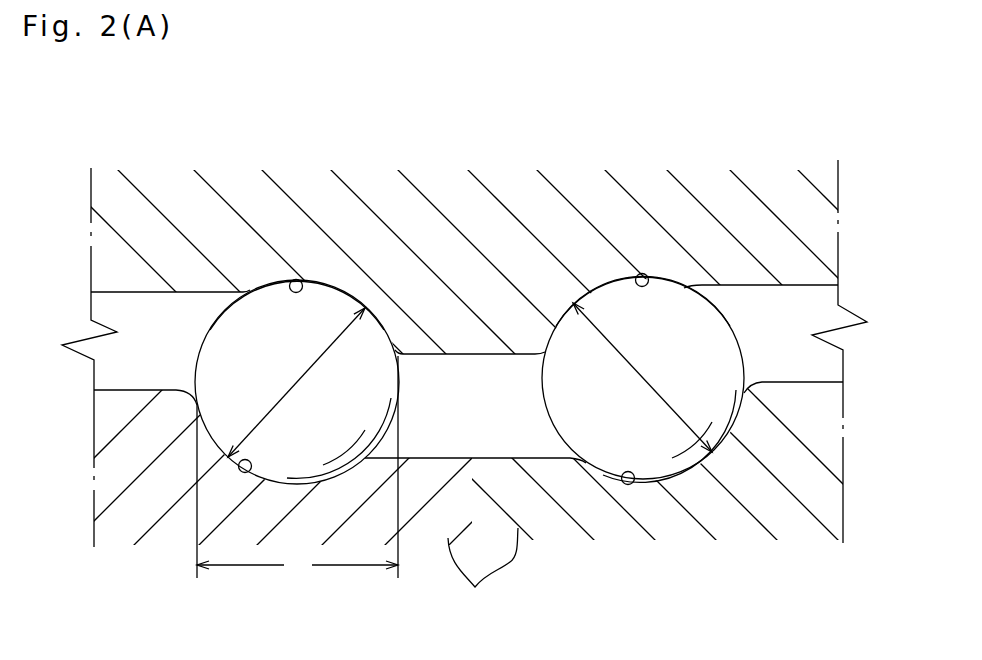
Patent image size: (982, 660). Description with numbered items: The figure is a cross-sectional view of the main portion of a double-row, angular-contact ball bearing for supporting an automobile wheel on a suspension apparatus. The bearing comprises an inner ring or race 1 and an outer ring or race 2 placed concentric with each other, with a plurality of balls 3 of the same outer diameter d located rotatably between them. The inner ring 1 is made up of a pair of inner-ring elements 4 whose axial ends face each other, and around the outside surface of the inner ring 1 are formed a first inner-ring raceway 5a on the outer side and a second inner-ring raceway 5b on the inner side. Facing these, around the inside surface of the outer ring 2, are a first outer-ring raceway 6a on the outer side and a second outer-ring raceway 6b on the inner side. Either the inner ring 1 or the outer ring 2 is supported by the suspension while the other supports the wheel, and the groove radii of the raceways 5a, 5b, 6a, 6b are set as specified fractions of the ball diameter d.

The inner ring 1 is at (809, 477).
The outer ring 2 is at (409, 233).
The balls 3 is at (262, 291).
The inner-ring element 4 is at (472, 458).
The first inner-ring raceway 5a is at (246, 469).
The second inner-ring raceway 5b is at (616, 479).
The first outer-ring raceway 6a is at (304, 284).
The second outer-ring raceway 6b is at (640, 276).